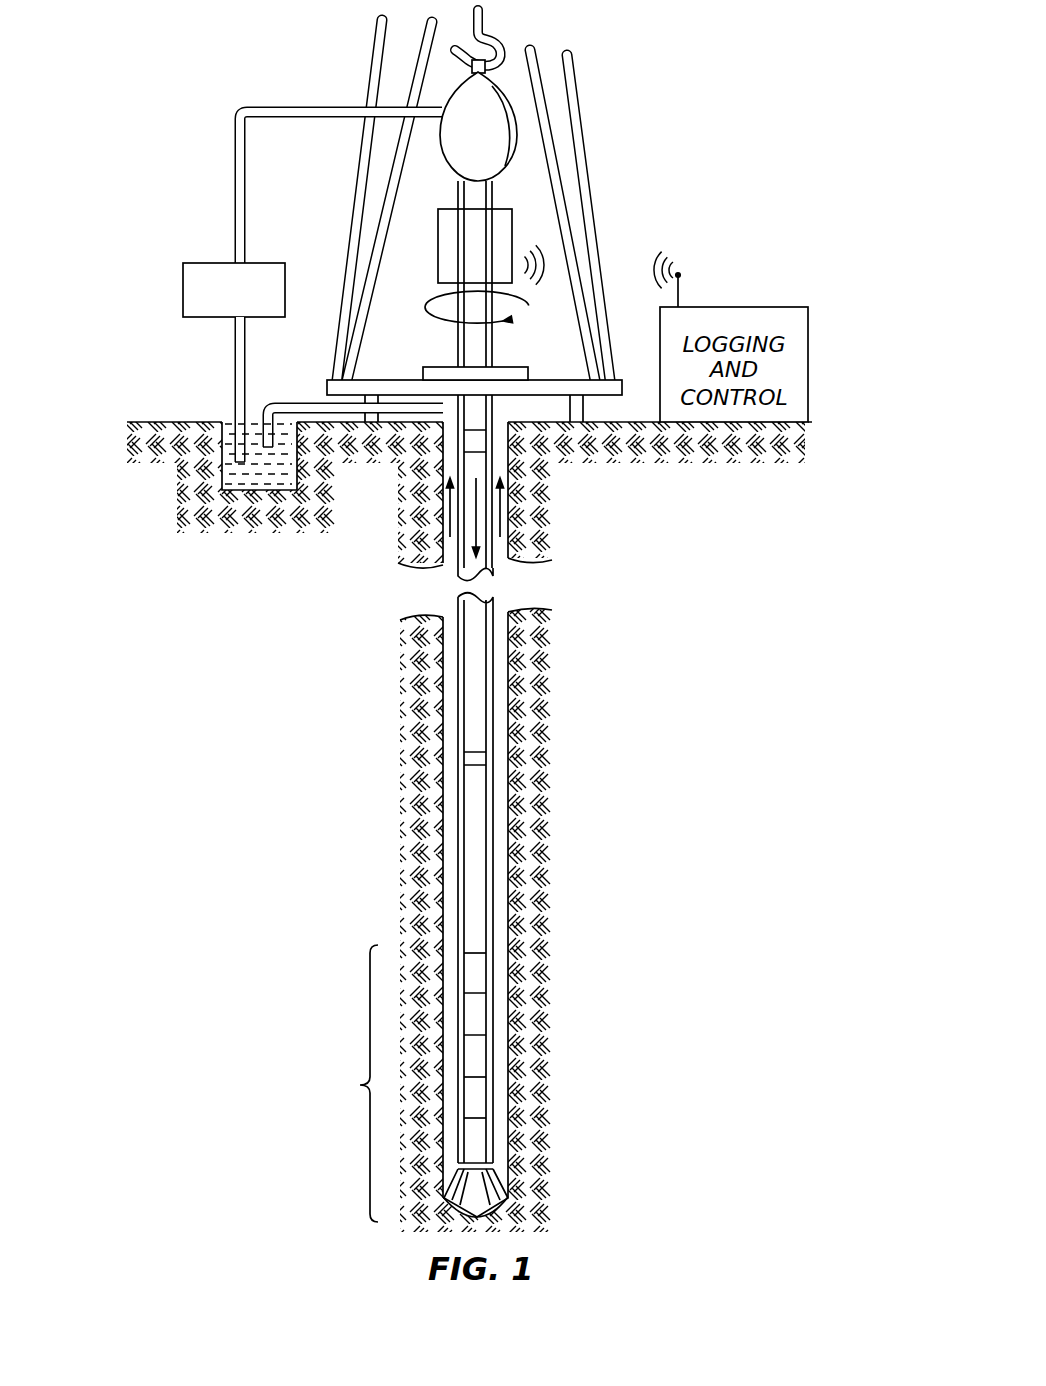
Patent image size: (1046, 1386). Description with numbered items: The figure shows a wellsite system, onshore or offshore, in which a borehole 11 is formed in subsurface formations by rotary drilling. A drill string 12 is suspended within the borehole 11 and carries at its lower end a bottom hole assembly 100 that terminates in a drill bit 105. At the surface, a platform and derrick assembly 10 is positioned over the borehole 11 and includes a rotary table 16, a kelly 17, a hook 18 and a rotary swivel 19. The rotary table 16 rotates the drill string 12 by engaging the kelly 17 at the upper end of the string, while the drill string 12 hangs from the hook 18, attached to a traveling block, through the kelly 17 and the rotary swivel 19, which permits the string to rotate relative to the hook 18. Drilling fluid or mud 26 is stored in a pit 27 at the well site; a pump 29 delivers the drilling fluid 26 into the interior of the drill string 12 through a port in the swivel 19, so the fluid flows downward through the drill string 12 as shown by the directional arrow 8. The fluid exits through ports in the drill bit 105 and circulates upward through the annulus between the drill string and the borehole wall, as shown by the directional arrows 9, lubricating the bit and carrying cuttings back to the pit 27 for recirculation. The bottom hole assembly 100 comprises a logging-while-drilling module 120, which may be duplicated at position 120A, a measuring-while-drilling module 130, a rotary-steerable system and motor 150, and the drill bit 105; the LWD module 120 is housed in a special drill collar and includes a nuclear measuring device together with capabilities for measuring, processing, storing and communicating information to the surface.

The directional arrow 8 is at (477, 536).
The directional arrows 9 is at (500, 515).
The platform and derrick assembly 10 is at (613, 125).
The borehole 11 is at (502, 410).
The drill string 12 is at (471, 415).
The rotary table 16 is at (503, 372).
The kelly 17 is at (475, 342).
The hook 18 is at (487, 22).
The rotary swivel 19 is at (470, 143).
The drilling fluid 26 is at (255, 487).
The pit 27 is at (225, 420).
The pump 29 is at (203, 318).
The bottom hole assembly 100 is at (398, 1083).
The drill bit 105 is at (477, 1188).
The logging-while-drilling module 120 is at (477, 1015).
The logging-while-drilling module 120A is at (477, 1102).
The measuring-while-drilling module 130 is at (477, 1058).
The rotary-steerable system and motor 150 is at (477, 1145).